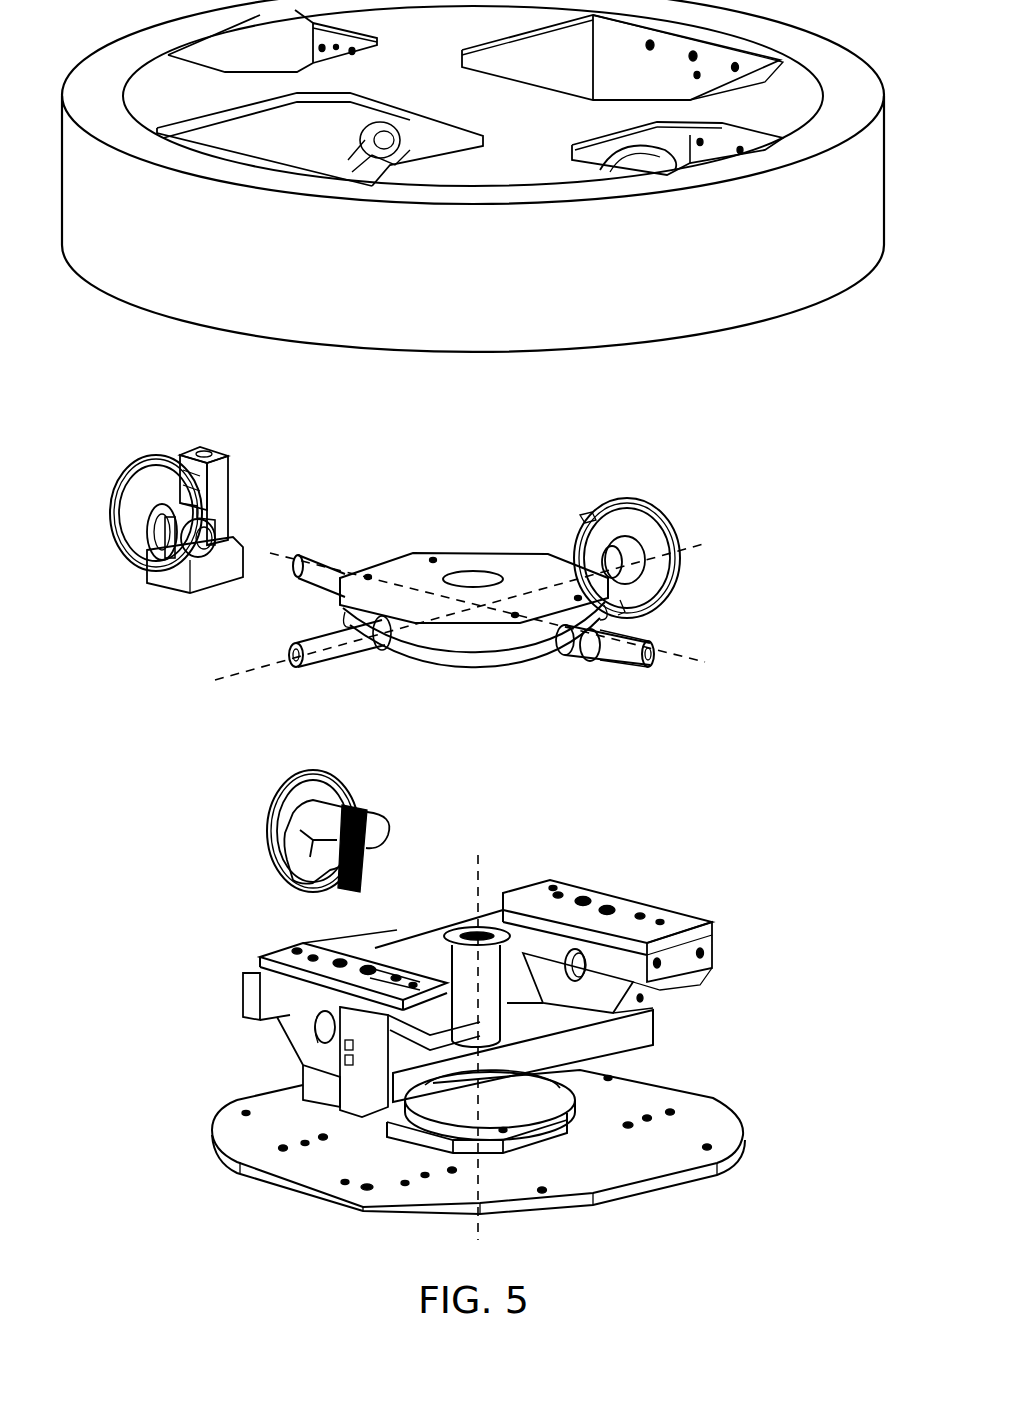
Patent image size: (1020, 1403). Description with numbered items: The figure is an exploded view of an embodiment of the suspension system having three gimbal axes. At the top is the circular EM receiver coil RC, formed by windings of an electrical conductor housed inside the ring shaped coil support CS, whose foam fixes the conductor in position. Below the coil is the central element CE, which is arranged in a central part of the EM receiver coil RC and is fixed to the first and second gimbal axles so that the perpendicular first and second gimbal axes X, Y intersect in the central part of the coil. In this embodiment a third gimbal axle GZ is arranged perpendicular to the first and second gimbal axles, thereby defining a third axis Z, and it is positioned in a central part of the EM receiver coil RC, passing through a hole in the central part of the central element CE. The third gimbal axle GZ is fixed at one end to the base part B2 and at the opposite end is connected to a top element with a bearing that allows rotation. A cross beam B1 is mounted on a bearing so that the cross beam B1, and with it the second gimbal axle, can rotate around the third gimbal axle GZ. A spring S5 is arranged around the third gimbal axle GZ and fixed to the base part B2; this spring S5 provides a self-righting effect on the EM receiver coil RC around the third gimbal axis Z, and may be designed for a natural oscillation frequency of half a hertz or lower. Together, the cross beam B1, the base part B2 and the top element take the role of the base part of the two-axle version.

The EM receiver coil RC is at (761, 343).
The coil support CS is at (473, 224).
The central element CE is at (395, 557).
The first gimbal axis X is at (505, 622).
The second gimbal axis Y is at (483, 599).
The third gimbal axis Z is at (472, 1028).
The third gimbal axle GZ is at (533, 1000).
The cross beam B1 is at (597, 1035).
The spring S5 is at (552, 1102).
The base part B2 is at (478, 1142).